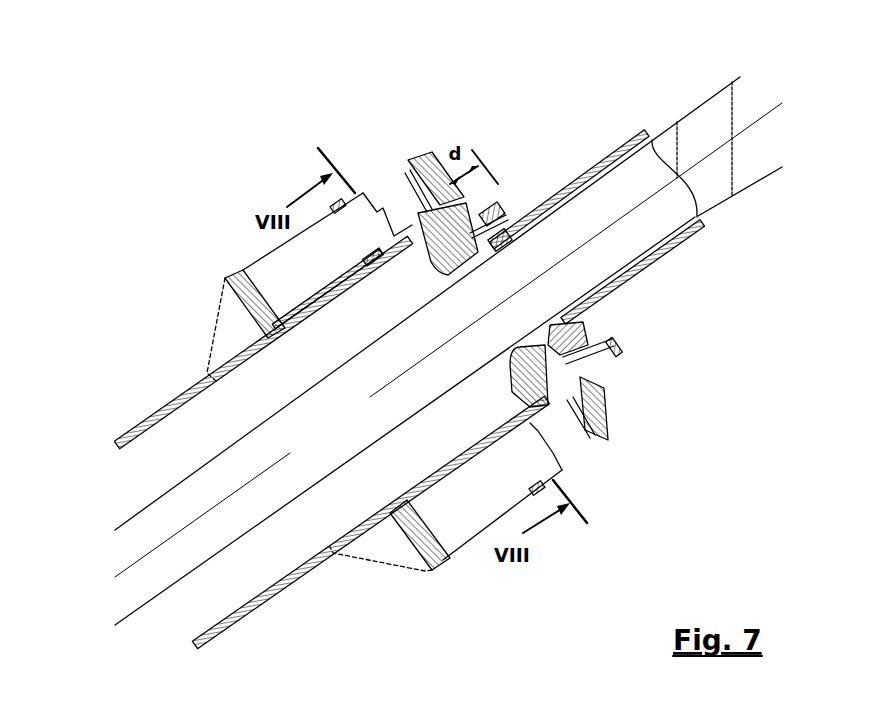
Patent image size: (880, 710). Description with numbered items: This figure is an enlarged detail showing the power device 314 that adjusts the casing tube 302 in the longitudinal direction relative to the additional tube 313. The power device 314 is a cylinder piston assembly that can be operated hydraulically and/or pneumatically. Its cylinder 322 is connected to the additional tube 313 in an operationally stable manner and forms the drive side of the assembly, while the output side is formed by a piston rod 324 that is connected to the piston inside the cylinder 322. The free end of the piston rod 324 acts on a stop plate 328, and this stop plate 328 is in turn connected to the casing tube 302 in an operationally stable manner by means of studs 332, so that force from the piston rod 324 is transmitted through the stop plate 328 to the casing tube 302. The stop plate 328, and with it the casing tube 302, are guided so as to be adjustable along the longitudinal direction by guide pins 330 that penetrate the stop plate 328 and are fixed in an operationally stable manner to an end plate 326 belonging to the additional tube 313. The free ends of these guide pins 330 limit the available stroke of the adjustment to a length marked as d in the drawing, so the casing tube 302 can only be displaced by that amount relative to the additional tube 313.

The casing tube 302 is at (697, 132).
The additional tube 313 is at (287, 583).
The power device 314 is at (287, 262).
The cylinder 322 is at (287, 280).
The piston rod 324 is at (397, 207).
The end plate 326 is at (533, 375).
The stop plate 328 is at (598, 417).
The guide pins 330 is at (597, 358).
The studs 332 is at (570, 340).